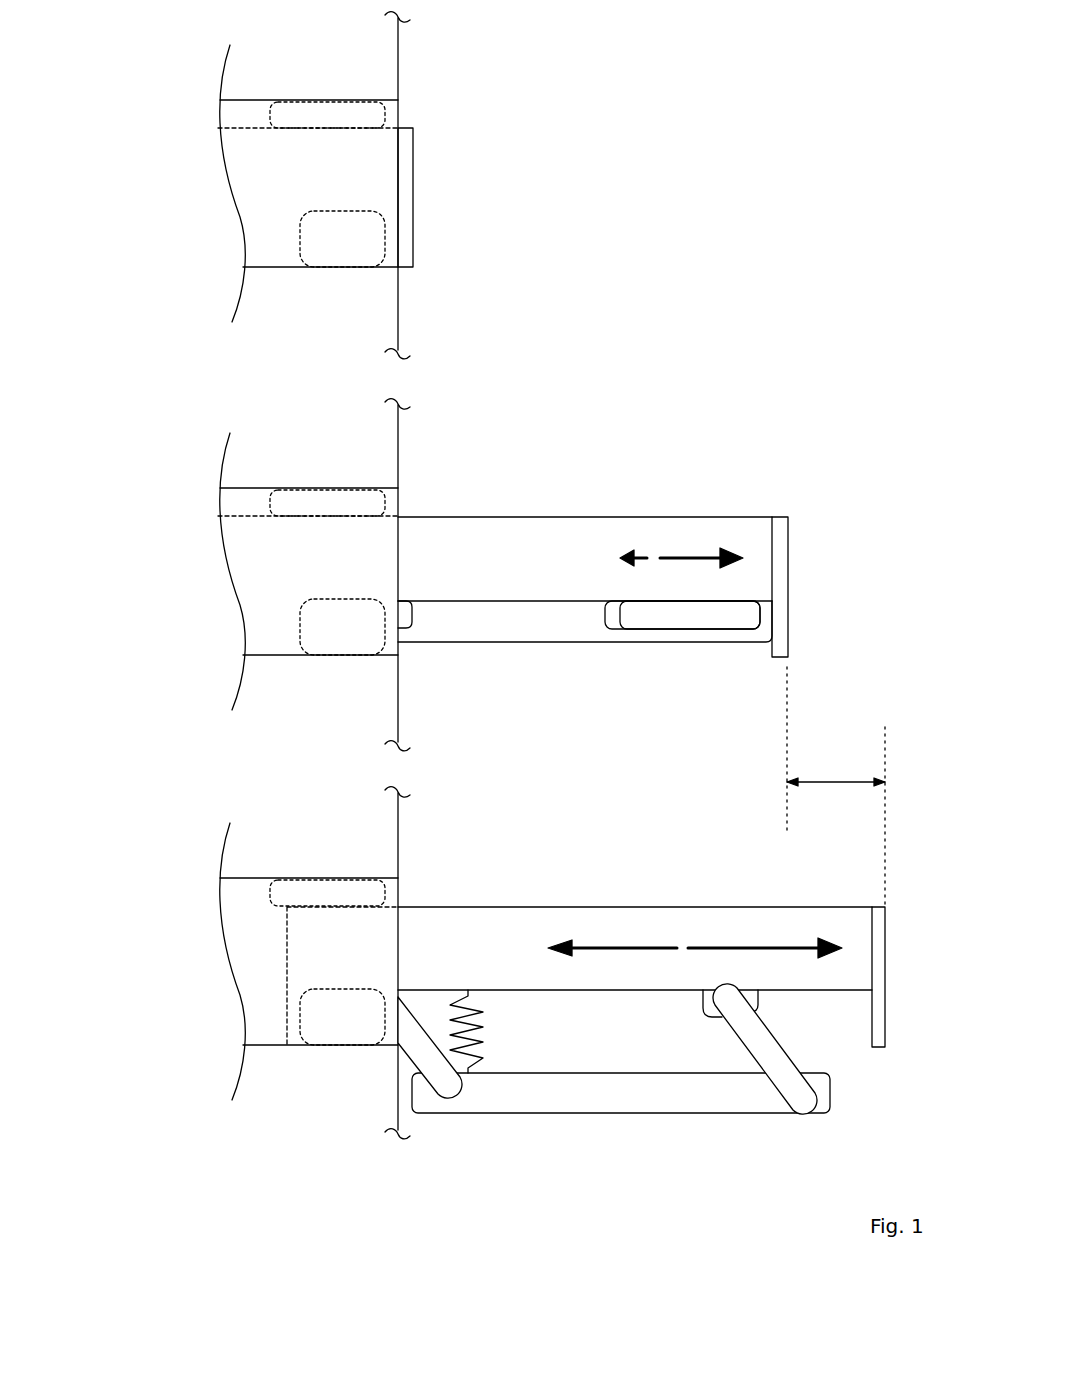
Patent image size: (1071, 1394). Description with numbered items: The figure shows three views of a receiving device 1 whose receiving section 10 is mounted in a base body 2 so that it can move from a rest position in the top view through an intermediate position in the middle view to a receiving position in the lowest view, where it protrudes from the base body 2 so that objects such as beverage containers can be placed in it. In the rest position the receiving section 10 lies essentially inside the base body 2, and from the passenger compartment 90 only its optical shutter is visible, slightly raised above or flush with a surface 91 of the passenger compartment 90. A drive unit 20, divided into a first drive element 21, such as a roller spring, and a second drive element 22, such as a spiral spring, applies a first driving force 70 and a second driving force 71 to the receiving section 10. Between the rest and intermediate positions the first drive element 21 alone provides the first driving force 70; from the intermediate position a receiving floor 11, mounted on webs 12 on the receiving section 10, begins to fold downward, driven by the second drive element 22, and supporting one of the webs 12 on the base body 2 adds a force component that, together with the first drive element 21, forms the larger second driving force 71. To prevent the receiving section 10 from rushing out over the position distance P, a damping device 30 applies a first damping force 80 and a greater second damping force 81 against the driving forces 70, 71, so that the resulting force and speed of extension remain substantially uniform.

The receiving device 1 is at (165, 184).
The base body 2 is at (235, 98).
The receiving section 10 is at (403, 130).
The receiving floor 11 is at (590, 630).
The webs 12 is at (405, 620).
The drive unit 20 is at (428, 556).
The first drive element 21 is at (307, 108).
The second drive element 22 is at (483, 1010).
The damping device 30 is at (343, 227).
The first driving force 70 is at (688, 553).
The second driving force 71 is at (707, 947).
The first damping force 80 is at (642, 552).
The second damping force 81 is at (662, 947).
The passenger compartment 90 is at (543, 46).
The surface 91 is at (400, 62).
The position distance P is at (858, 775).